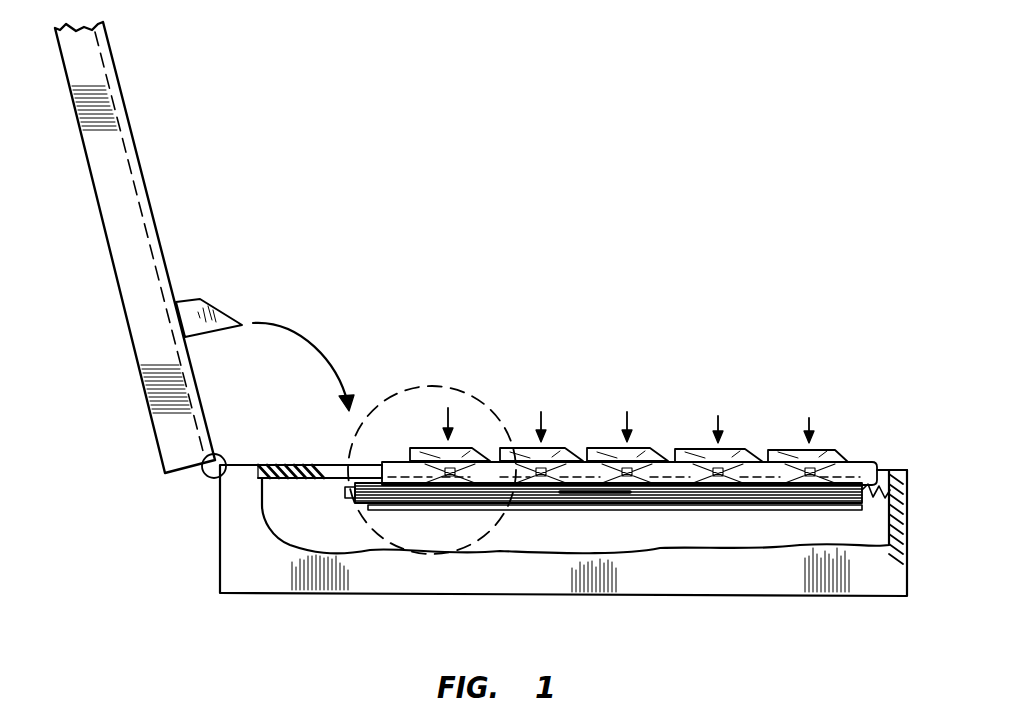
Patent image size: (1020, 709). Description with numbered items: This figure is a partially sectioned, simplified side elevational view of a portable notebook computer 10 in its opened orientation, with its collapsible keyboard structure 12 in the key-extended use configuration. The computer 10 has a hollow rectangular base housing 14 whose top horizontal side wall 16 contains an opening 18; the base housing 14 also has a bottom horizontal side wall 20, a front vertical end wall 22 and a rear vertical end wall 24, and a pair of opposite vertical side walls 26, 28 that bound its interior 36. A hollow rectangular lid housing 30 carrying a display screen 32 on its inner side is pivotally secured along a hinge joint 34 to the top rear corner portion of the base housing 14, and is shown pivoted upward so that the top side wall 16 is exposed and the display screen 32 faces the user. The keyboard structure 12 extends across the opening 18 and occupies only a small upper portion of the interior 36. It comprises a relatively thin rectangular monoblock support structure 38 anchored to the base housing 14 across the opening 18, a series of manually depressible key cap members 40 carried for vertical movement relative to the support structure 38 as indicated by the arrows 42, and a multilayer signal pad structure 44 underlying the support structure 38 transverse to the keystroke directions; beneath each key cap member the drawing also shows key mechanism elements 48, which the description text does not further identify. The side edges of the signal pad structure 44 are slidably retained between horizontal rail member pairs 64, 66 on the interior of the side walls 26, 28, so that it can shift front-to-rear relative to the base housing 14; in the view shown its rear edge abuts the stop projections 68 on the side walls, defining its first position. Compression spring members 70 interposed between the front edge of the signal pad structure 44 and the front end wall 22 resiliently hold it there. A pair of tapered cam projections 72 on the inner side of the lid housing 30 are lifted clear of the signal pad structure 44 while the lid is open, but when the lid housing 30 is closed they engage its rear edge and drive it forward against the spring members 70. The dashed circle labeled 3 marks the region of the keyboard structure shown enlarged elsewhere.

The portable notebook computer 10 is at (128, 500).
The collapsible keyboard structure 12 is at (587, 438).
The base housing 14 is at (371, 593).
The top horizontal side wall 16 is at (270, 463).
The opening 18 is at (340, 464).
The bottom horizontal side wall 20 is at (601, 598).
The front vertical end wall 22 is at (891, 537).
The rear vertical end wall 24 is at (217, 537).
The vertical side wall 26 is at (715, 586).
The vertical side wall 28 is at (765, 548).
The lid housing 30 is at (93, 218).
The display screen 32 is at (143, 173).
The hinge joint 34 is at (200, 472).
The interior 36 is at (677, 541).
The monoblock support structure 38 is at (879, 468).
The key cap members 40 is at (432, 460).
The arrows 42 is at (495, 444).
The signal pad structure 44 is at (657, 494).
The key mechanisms 48 is at (484, 462).
The rail member pair 64 is at (376, 440).
The rail member pair 66 is at (399, 512).
The stop projections 68 is at (347, 492).
The compression spring members 70 is at (868, 500).
The tapered cam projections 72 is at (211, 302).
The detail circle FIG. 3 is at (455, 384).